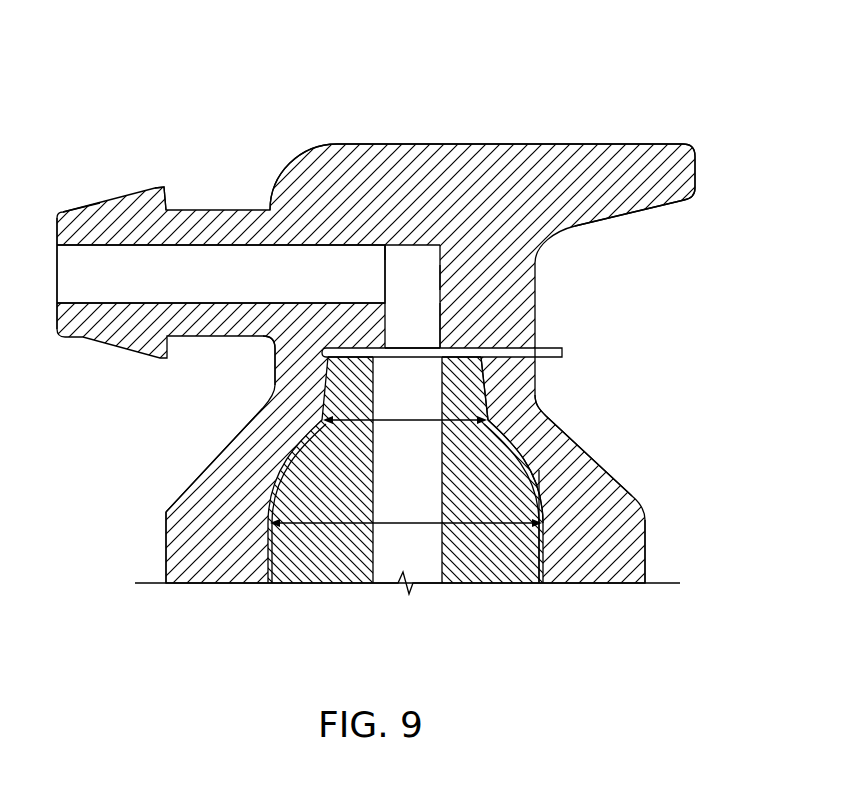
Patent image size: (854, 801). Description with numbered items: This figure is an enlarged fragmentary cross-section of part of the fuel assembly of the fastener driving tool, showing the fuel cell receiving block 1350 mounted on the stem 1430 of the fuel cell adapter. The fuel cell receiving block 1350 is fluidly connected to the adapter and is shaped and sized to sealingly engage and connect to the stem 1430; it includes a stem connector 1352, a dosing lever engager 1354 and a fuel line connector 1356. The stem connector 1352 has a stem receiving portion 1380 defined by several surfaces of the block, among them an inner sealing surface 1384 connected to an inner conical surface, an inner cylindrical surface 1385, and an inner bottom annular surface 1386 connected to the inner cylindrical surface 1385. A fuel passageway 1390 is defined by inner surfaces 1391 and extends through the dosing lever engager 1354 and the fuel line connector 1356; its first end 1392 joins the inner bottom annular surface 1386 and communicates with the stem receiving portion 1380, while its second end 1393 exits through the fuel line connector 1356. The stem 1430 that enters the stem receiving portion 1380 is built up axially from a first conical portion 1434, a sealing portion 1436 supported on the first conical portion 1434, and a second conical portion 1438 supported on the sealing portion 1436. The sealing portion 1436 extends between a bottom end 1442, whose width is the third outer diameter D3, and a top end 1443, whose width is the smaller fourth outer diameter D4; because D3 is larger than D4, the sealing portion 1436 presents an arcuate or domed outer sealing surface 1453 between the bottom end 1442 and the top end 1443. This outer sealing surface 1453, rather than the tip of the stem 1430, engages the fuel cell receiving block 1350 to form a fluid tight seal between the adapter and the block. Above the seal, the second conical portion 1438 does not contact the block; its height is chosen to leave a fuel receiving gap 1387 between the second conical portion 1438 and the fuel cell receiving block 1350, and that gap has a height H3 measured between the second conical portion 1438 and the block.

The fuel cell receiving block 1350 is at (541, 257).
The stem connector 1352 is at (645, 570).
The dosing lever engager 1354 is at (556, 144).
The fuel line connector 1356 is at (155, 190).
The stem receiving portion 1380 is at (166, 511).
The inner sealing surface 1384 is at (285, 452).
The inner cylindrical surface 1385 is at (297, 382).
The inner bottom annular surface 1386 is at (325, 391).
The fuel receiving gap 1387 is at (403, 348).
The fuel passageway 1390 is at (173, 289).
The inner surfaces 1391 is at (385, 245).
The first end 1392 is at (445, 331).
The second end 1393 is at (95, 237).
The stem 1430 is at (483, 568).
The first conical portion 1434 is at (265, 552).
The sealing portion 1436 is at (545, 487).
The second conical portion 1438 is at (483, 392).
The bottom end 1442 is at (623, 488).
The top end 1443 is at (540, 413).
The outer sealing surface 1453 is at (522, 457).
The third outer diameter D3 is at (275, 490).
The fourth outer diameter D4 is at (330, 419).
The height of the fuel receiving gap H3 is at (562, 352).